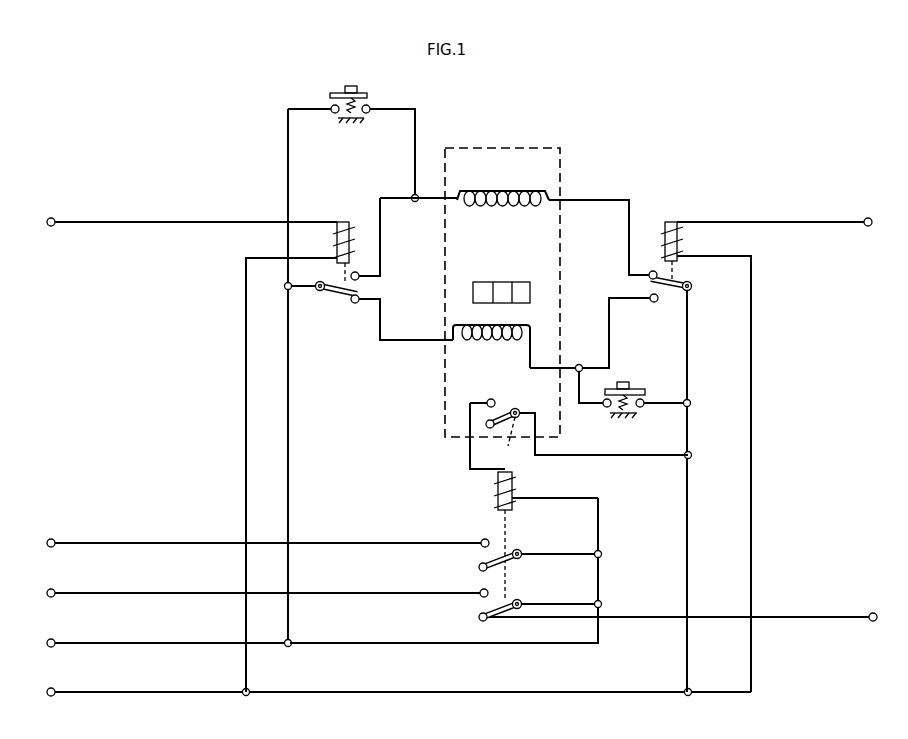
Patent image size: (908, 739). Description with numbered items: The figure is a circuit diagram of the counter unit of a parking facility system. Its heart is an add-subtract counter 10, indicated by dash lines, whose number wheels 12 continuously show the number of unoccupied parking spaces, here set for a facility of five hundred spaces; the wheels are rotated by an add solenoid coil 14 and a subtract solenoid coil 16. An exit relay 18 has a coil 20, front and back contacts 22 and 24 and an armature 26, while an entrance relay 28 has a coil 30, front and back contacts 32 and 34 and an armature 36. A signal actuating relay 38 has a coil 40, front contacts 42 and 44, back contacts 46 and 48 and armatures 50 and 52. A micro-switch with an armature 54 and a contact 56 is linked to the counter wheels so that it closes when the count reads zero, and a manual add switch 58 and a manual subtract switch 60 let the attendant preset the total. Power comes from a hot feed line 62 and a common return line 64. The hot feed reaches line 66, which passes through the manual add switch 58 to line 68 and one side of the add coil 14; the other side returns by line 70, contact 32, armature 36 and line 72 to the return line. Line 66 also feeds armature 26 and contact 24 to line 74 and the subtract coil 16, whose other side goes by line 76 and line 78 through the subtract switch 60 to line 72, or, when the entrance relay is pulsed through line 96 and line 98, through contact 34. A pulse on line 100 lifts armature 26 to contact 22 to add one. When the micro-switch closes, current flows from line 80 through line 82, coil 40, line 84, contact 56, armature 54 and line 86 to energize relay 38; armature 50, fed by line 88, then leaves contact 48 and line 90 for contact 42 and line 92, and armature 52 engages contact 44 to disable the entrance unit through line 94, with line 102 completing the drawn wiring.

The add-subtract counter 10 is at (546, 148).
The number wheels 12 is at (490, 303).
The add solenoid coil 14 is at (548, 195).
The subtract solenoid coil 16 is at (470, 341).
The exit relay 18 is at (352, 215).
The coil 20 is at (337, 237).
The front contact 22 is at (360, 278).
The back contact 24 is at (355, 304).
The armature 26 is at (296, 292).
The entrance relay 28 is at (682, 212).
The coil 30 is at (678, 238).
The front contact 32 is at (649, 277).
The back contact 34 is at (656, 302).
The armature 36 is at (686, 284).
The signal actuating relay 38 is at (481, 494).
The coil 40 is at (513, 480).
The front contact 42 is at (480, 590).
The front contact 44 is at (483, 539).
The back contact 46 is at (479, 567).
The back contact 48 is at (479, 619).
The armature 50 is at (478, 610).
The armature 52 is at (500, 560).
The micro-switch armature 54 is at (504, 436).
The contact 56 is at (489, 399).
The manual add switch 58 is at (330, 105).
The manual subtract switch 60 is at (638, 399).
The hot feed line 62 is at (191, 643).
The common return line 64 is at (189, 692).
The line 66 is at (289, 498).
The line 68 is at (416, 202).
The line 70 is at (600, 201).
The line 72 is at (689, 346).
The line 74 is at (438, 340).
The line 76 is at (542, 370).
The line 78 is at (583, 405).
The line 80 is at (602, 625).
The line 82 is at (599, 527).
The line 84 is at (470, 457).
The line 86 is at (632, 457).
The line 88 is at (552, 604).
The line 90 is at (818, 617).
The line 92 is at (197, 593).
The line 94 is at (174, 543).
The line 96 is at (794, 222).
The line 98 is at (752, 367).
The line 100 is at (163, 222).
The conductor 102 is at (246, 350).